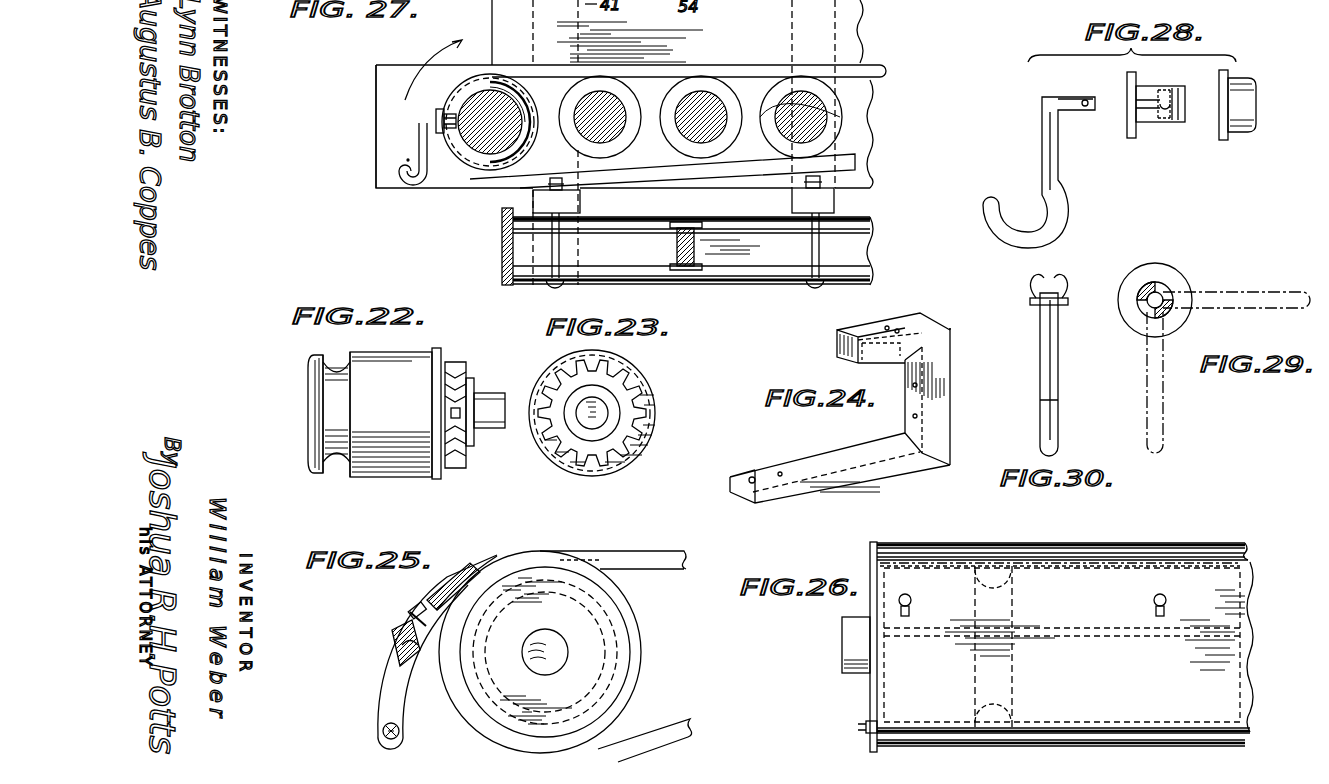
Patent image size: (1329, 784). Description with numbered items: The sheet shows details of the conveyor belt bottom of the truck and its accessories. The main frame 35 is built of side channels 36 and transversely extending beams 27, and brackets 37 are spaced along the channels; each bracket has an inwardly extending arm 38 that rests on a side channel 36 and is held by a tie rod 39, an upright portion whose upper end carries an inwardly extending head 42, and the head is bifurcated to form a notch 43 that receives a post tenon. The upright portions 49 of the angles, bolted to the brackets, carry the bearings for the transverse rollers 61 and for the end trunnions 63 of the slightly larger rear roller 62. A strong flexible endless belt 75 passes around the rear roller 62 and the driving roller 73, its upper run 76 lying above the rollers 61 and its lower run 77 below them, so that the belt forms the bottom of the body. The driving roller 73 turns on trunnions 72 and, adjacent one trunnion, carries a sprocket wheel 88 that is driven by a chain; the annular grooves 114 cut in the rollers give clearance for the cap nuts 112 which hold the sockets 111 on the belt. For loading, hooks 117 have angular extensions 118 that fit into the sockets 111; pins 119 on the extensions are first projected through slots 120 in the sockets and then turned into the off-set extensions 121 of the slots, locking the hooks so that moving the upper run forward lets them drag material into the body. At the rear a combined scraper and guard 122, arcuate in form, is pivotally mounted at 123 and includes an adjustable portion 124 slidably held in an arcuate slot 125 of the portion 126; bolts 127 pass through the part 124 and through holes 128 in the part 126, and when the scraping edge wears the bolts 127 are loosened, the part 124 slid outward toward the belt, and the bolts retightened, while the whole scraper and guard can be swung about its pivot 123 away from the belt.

In FIG. 27, the transversely extending beams 27 is at (678, 243).
In FIG. 27, the main frame 35 is at (500, 262).
In FIG. 27, the side channels 36 is at (853, 247).
In FIG. 27, the brackets 37 is at (895, 200).
In FIG. 24, the brackets 37 is at (940, 432).
In FIG. 24, the inwardly extending arms 38 is at (848, 456).
In FIG. 27, the tie rods 39 is at (812, 255).
In FIG. 24, the inwardly extending heads 42 is at (900, 325).
In FIG. 24, the notches 43 is at (838, 349).
In FIG. 27, the upright portions of the angles 49 is at (378, 120).
In FIG. 27, the rollers 61 is at (614, 128).
In FIG. 27, the rear roller 62 is at (492, 152).
In FIG. 25, the rear roller 62 is at (632, 630).
In FIG. 26, the rear roller 62 is at (1178, 562).
In FIG. 25, the end trunnions 63 is at (565, 650).
In FIG. 26, the end trunnions 63 is at (855, 643).
In FIG. 22, the trunnions 72 is at (497, 402).
In FIG. 23, the trunnions 72 is at (585, 412).
In FIG. 22, the driving roller 73 is at (415, 368).
In FIG. 23, the driving roller 73 is at (655, 444).
In FIG. 27, the belt 75 is at (507, 70).
In FIG. 25, the belt 75 is at (644, 571).
In FIG. 26, the belt 75 is at (904, 553).
In FIG. 27, the upper run 76 is at (745, 70).
In FIG. 25, the upper run 76 is at (560, 553).
In FIG. 26, the upper run 76 is at (1048, 551).
In FIG. 27, the lower run 77 is at (665, 172).
In FIG. 25, the lower run 77 is at (612, 731).
In FIG. 22, the sprocket wheel 88 is at (462, 448).
In FIG. 23, the sprocket wheel 88 is at (622, 388).
In FIG. 28, the sockets 111 is at (1150, 120).
In FIG. 28, the cap nuts 112 is at (1250, 104).
In FIG. 27, the annular grooves 114 is at (786, 132).
In FIG. 22, the annular grooves 114 is at (330, 398).
In FIG. 25, the annular grooves 114 is at (604, 662).
In FIG. 26, the annular grooves 114 is at (1013, 697).
In FIG. 27, the hooks 117 is at (421, 183).
In FIG. 28, the hooks 117 is at (1046, 172).
In FIG. 29, the hooks 117 is at (1234, 301).
In FIG. 30, the hooks 117 is at (1042, 386).
In FIG. 27, the angular extensions 118 is at (438, 118).
In FIG. 28, the angular extensions 118 is at (1068, 110).
In FIG. 28, the pins 119 is at (1090, 80).
In FIG. 30, the pins 119 is at (1049, 284).
In FIG. 28, the slots 120 is at (1148, 102).
In FIG. 29, the slots 120 is at (1155, 286).
In FIG. 28, the off-set extensions of the slots 121 is at (1166, 116).
In FIG. 29, the off-set extensions of the slots 121 is at (1168, 296).
In FIG. 25, the combined scraper and guard 122 is at (392, 680).
In FIG. 26, the combined scraper and guard 122 is at (1061, 647).
In FIG. 25, the pivotal mounting 123 is at (380, 732).
In FIG. 26, the pivotal mounting 123 is at (866, 729).
In FIG. 25, the adjustable portion 124 is at (490, 543).
In FIG. 26, the adjustable portion 124 is at (890, 564).
In FIG. 25, the arcuate slot 125 is at (480, 562).
In FIG. 25, the portion 126 is at (416, 656).
In FIG. 26, the portion 126 is at (1212, 598).
In FIG. 25, the bolts 127 is at (410, 612).
In FIG. 26, the bolts 127 is at (911, 600).
In FIG. 25, the holes 128 is at (425, 584).
In FIG. 26, the holes 128 is at (910, 612).